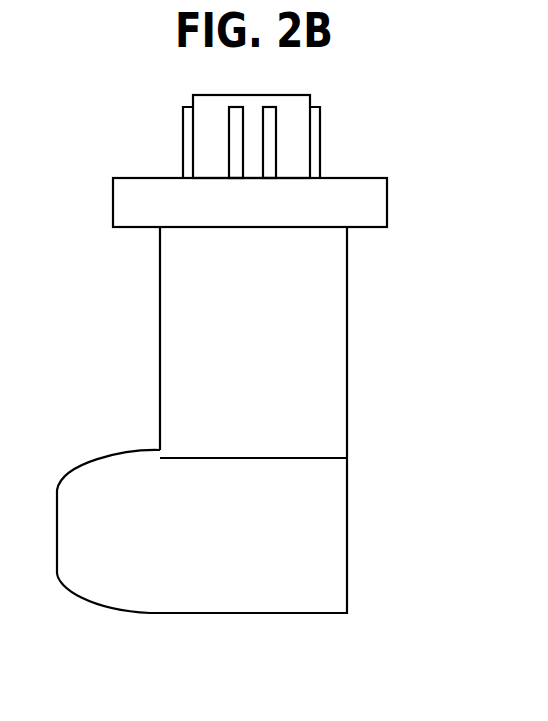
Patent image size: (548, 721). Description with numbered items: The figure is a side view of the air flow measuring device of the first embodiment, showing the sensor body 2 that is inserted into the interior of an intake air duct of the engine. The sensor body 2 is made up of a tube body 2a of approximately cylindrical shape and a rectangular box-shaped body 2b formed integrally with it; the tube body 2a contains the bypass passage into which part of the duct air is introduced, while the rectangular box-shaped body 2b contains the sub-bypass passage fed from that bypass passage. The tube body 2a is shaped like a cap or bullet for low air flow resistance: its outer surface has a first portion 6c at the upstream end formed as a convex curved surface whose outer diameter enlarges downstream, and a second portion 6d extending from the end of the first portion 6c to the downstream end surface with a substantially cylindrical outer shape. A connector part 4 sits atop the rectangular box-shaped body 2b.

The sensor body 2 is at (251, 450).
The tube body 2a is at (231, 556).
The rectangular box-shaped body 2b is at (321, 400).
The connector 4 is at (367, 195).
The first portion 6c is at (85, 597).
The second portion 6d is at (233, 613).